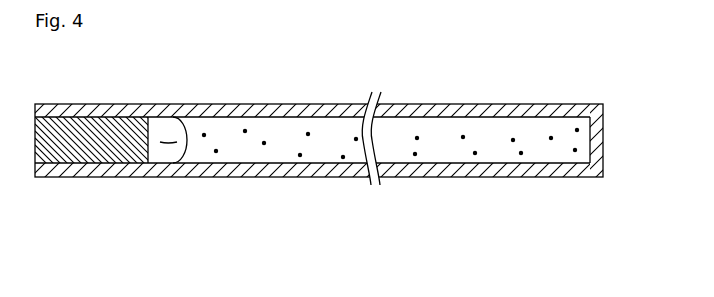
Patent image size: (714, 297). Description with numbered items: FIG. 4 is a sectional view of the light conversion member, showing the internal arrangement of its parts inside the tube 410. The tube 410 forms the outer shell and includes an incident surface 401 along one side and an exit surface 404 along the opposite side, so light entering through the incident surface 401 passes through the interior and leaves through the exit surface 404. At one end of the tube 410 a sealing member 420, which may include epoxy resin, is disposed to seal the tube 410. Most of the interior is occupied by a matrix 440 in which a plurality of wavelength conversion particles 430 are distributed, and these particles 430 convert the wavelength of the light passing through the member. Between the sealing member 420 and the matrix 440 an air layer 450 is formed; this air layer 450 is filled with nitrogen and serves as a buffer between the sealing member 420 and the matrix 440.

The incident surface 401 is at (437, 104).
The exit surface 404 is at (438, 177).
The tube 410 is at (324, 170).
The sealing member 420 is at (92, 148).
The wavelength conversion particles 430 is at (265, 146).
The matrix 440 is at (203, 152).
The air layer 450 is at (166, 142).